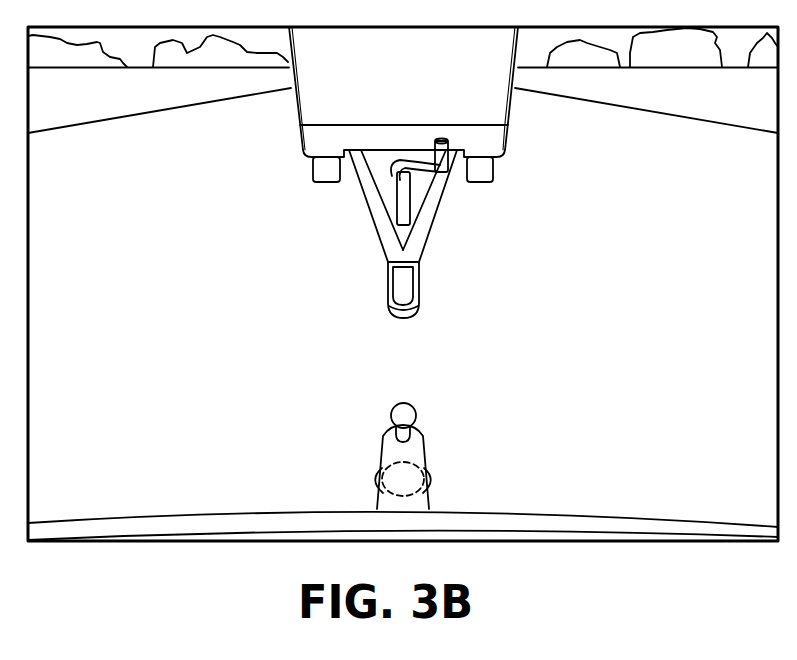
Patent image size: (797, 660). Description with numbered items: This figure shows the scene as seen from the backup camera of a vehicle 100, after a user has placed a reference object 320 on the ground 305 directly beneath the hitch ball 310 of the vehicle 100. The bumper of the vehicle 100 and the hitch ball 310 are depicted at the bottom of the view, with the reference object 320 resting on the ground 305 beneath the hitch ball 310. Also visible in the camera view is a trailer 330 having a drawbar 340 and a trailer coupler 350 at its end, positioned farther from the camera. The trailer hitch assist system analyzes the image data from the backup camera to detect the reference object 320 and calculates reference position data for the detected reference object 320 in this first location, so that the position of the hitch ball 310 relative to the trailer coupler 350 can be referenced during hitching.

The vehicle 100 is at (675, 523).
The ground 305 is at (110, 306).
The hitch ball 310 is at (397, 405).
The reference object 320 is at (437, 478).
The trailer 330 is at (495, 104).
The drawbar 340 is at (443, 220).
The trailer coupler 350 is at (420, 297).